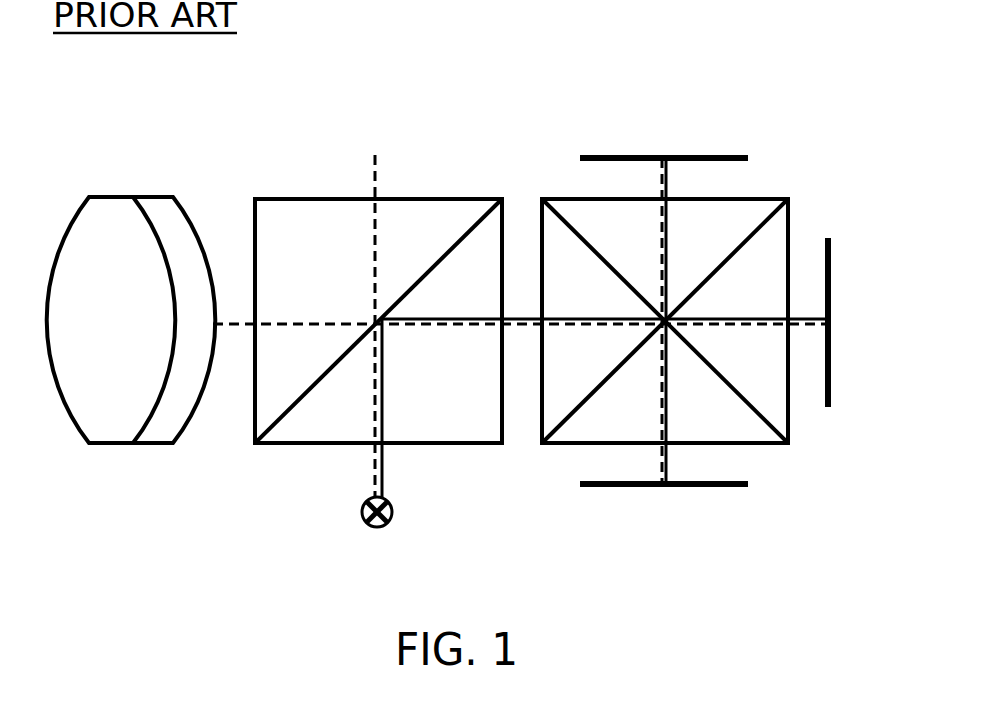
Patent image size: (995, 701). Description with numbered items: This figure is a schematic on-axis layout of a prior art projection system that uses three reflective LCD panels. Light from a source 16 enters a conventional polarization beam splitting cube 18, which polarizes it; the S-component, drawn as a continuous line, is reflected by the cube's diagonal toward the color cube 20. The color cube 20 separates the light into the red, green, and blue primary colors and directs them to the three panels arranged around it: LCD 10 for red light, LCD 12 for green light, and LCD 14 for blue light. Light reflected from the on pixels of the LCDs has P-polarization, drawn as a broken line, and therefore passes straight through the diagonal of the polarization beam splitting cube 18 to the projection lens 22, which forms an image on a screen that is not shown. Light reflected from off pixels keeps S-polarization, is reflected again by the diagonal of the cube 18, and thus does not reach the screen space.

The LCD for red light 10 is at (699, 155).
The LCD for green light 12 is at (830, 370).
The LCD for blue light 14 is at (707, 487).
The source 16 is at (380, 527).
The polarization beam splitting cube 18 is at (317, 423).
The color cube 20 is at (745, 447).
The projection lens 22 is at (117, 423).